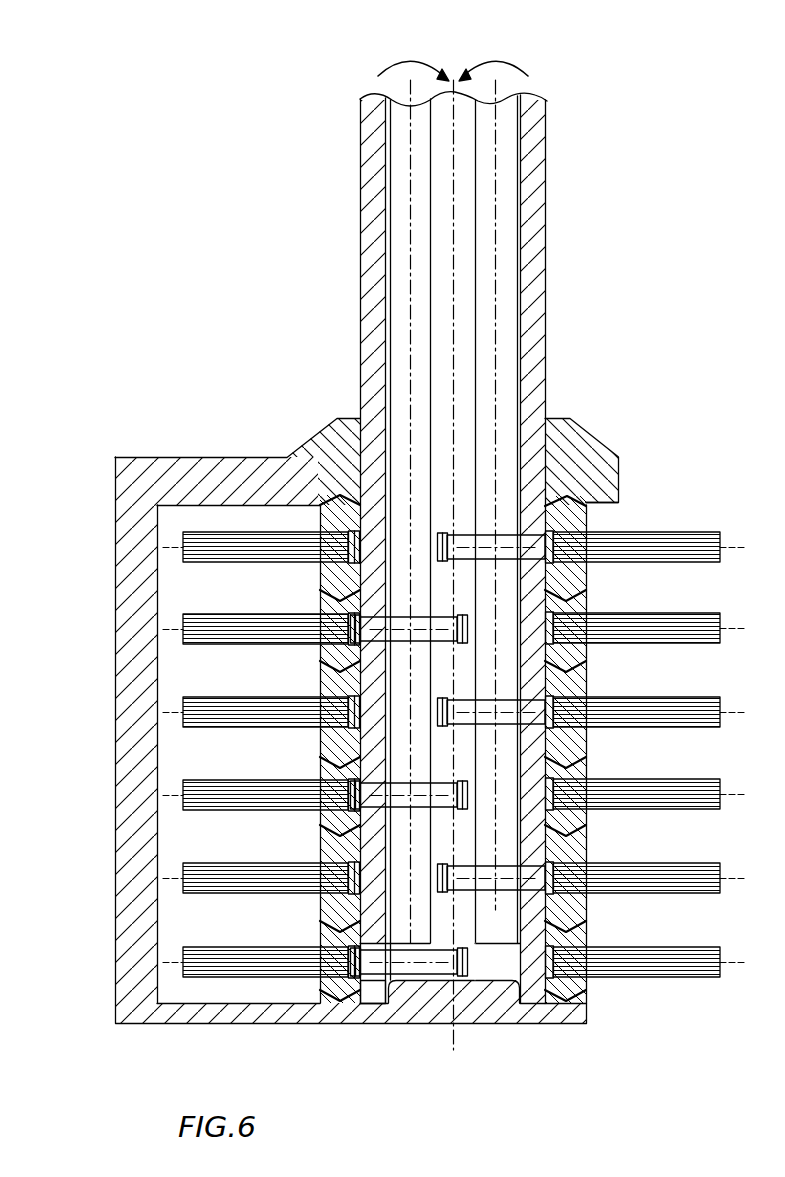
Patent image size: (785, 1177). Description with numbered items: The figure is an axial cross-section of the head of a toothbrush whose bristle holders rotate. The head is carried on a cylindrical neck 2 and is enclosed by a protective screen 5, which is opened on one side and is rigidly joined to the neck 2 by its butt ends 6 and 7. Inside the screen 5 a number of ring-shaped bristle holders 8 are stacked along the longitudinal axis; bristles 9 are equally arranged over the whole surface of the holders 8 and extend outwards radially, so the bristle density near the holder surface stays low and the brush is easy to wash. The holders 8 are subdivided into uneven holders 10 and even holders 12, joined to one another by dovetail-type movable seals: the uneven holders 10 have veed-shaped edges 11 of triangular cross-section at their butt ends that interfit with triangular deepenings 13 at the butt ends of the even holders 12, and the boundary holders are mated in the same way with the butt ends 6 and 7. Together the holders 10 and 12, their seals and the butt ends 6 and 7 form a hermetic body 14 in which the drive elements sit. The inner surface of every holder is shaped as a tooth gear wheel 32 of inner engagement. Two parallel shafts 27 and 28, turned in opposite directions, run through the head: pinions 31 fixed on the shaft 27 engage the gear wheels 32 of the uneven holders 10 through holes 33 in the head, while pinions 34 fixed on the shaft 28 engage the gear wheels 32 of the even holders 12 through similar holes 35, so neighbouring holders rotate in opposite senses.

The cylindrical neck 2 is at (530, 155).
The protective screen 5 is at (137, 573).
The butt end 6 is at (183, 472).
The butt end 7 is at (420, 1005).
The ring-shaped bristle holders 8 is at (605, 516).
The bristles 9 is at (218, 544).
The uneven holders 10 is at (340, 520).
The veed-shaped edges 11 is at (340, 495).
The even holders 12 is at (573, 605).
The triangular deepenings 13 is at (565, 987).
The hermetic body 14 is at (497, 955).
The shaft 27 is at (500, 290).
The shaft 28 is at (418, 212).
The pinions 31 is at (495, 547).
The tooth gear wheels 32 is at (365, 983).
The holes 33 is at (618, 477).
The pinions 34 is at (410, 628).
The holes 35 is at (260, 782).